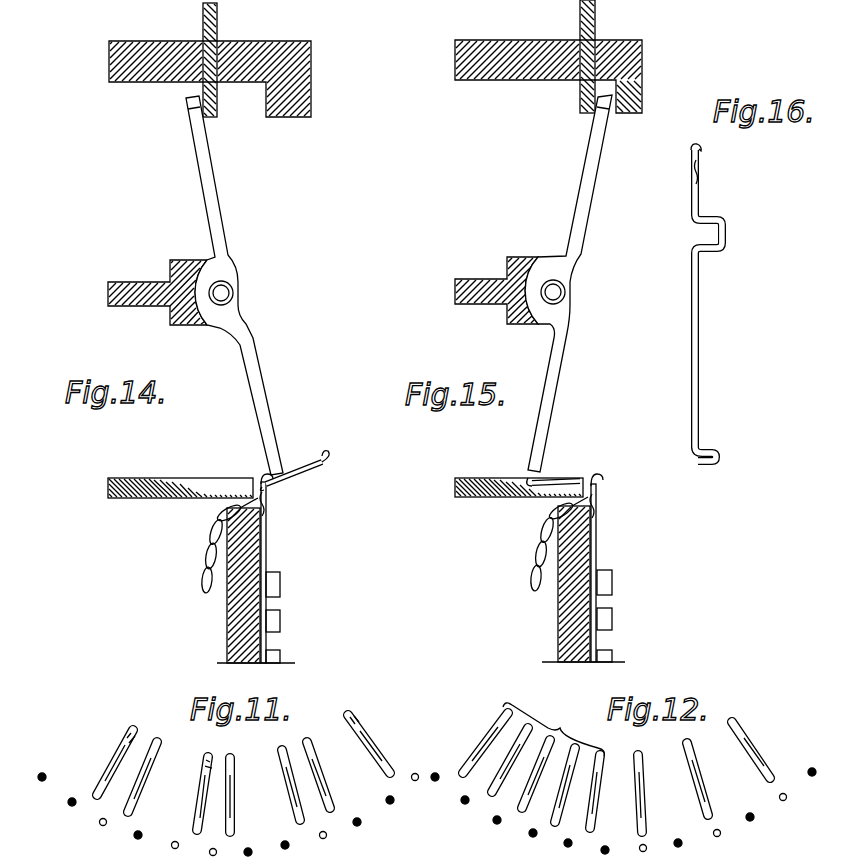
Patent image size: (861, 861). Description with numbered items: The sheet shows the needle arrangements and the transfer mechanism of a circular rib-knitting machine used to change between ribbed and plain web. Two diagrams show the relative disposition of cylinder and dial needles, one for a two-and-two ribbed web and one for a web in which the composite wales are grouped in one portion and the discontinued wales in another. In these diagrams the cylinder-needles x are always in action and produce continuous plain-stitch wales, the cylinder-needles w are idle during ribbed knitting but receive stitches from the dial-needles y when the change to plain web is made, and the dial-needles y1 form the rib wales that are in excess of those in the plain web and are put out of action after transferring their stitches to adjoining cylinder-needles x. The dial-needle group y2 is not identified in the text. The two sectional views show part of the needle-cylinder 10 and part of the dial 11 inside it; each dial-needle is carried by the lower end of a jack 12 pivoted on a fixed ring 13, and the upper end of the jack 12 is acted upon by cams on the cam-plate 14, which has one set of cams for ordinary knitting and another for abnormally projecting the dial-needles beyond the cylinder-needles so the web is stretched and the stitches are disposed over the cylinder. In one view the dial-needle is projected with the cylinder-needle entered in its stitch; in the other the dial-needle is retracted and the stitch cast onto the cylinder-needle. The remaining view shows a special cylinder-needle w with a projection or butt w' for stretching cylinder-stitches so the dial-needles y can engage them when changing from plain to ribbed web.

In FIG. 14, the needle-cylinder 10 is at (227, 653).
In FIG. 15, the needle-cylinder 10 is at (558, 642).
In FIG. 14, the dial 11 is at (152, 498).
In FIG. 15, the dial 11 is at (480, 497).
In FIG. 14, the jack 12 is at (264, 407).
In FIG. 15, the jack 12 is at (552, 396).
In FIG. 14, the fixed ring 13 is at (147, 282).
In FIG. 15, the fixed ring 13 is at (481, 279).
In FIG. 14, the cam-plate 14 is at (141, 82).
In FIG. 15, the cam-plate 14 is at (516, 80).
In FIG. 14, the cylinder-needle w is at (279, 568).
In FIG. 15, the cylinder-needle w is at (609, 568).
In FIG. 16, the cylinder-needle w is at (694, 302).
In FIG. 11, the cylinder-needle w is at (256, 818).
In FIG. 12, the cylinder-needle w is at (711, 828).
In FIG. 16, the projection or butt w' is at (733, 234).
In FIG. 11, the cylinder-needle x is at (236, 817).
In FIG. 12, the cylinder-needle x is at (636, 814).
In FIG. 14, the dial-needle y is at (295, 480).
In FIG. 15, the dial-needle y is at (553, 476).
In FIG. 11, the dial-needle y is at (108, 760).
In FIG. 12, the dial-needle y is at (657, 786).
In FIG. 11, the dial-needle y1 is at (150, 784).
In FIG. 11, the hook group y2 is at (343, 782).
In FIG. 12, the hook group y2 is at (533, 765).